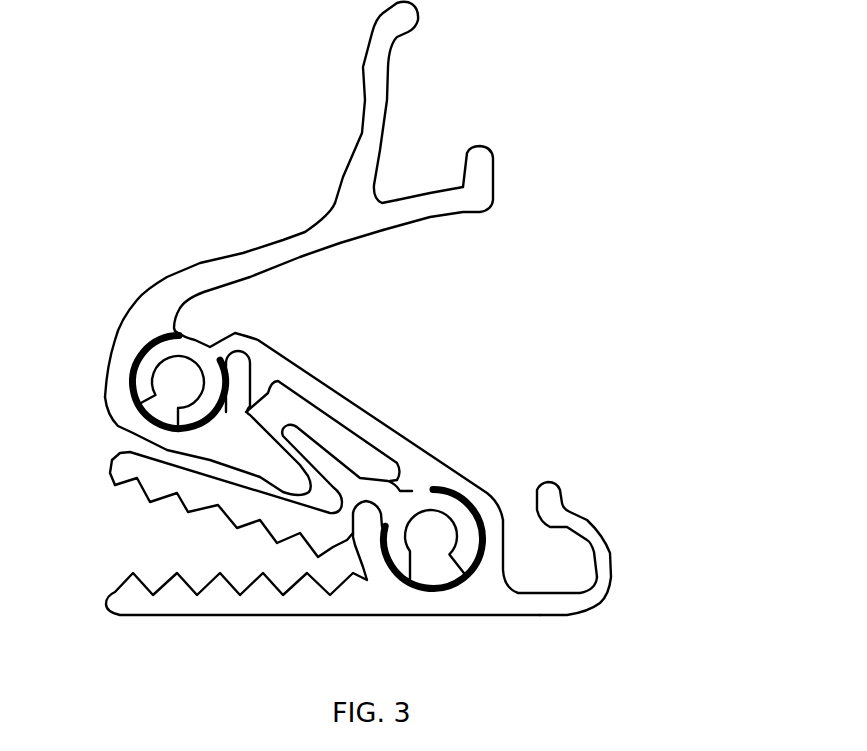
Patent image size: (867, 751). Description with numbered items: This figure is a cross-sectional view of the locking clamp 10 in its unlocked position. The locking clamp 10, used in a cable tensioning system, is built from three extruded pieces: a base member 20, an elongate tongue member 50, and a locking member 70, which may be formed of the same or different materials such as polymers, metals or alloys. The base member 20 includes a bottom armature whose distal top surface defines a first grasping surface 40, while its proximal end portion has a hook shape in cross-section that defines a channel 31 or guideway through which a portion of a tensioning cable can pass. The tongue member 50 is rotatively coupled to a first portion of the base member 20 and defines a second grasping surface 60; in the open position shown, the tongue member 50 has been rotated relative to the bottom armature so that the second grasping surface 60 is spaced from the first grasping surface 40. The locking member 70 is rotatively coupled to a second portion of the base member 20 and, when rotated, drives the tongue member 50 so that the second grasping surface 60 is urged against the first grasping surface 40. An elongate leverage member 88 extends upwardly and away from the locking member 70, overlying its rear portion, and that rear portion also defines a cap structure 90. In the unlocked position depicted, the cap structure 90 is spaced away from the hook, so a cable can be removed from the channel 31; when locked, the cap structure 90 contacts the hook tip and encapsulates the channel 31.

The locking clamp 10 is at (557, 285).
The base member 20 is at (613, 550).
The channel 31 is at (552, 575).
The first grasping surface 40 is at (235, 586).
The tongue member 50 is at (110, 483).
The second grasping surface 60 is at (187, 513).
The locking member 70 is at (200, 264).
The leverage member 88 is at (388, 72).
The cap structure 90 is at (493, 155).